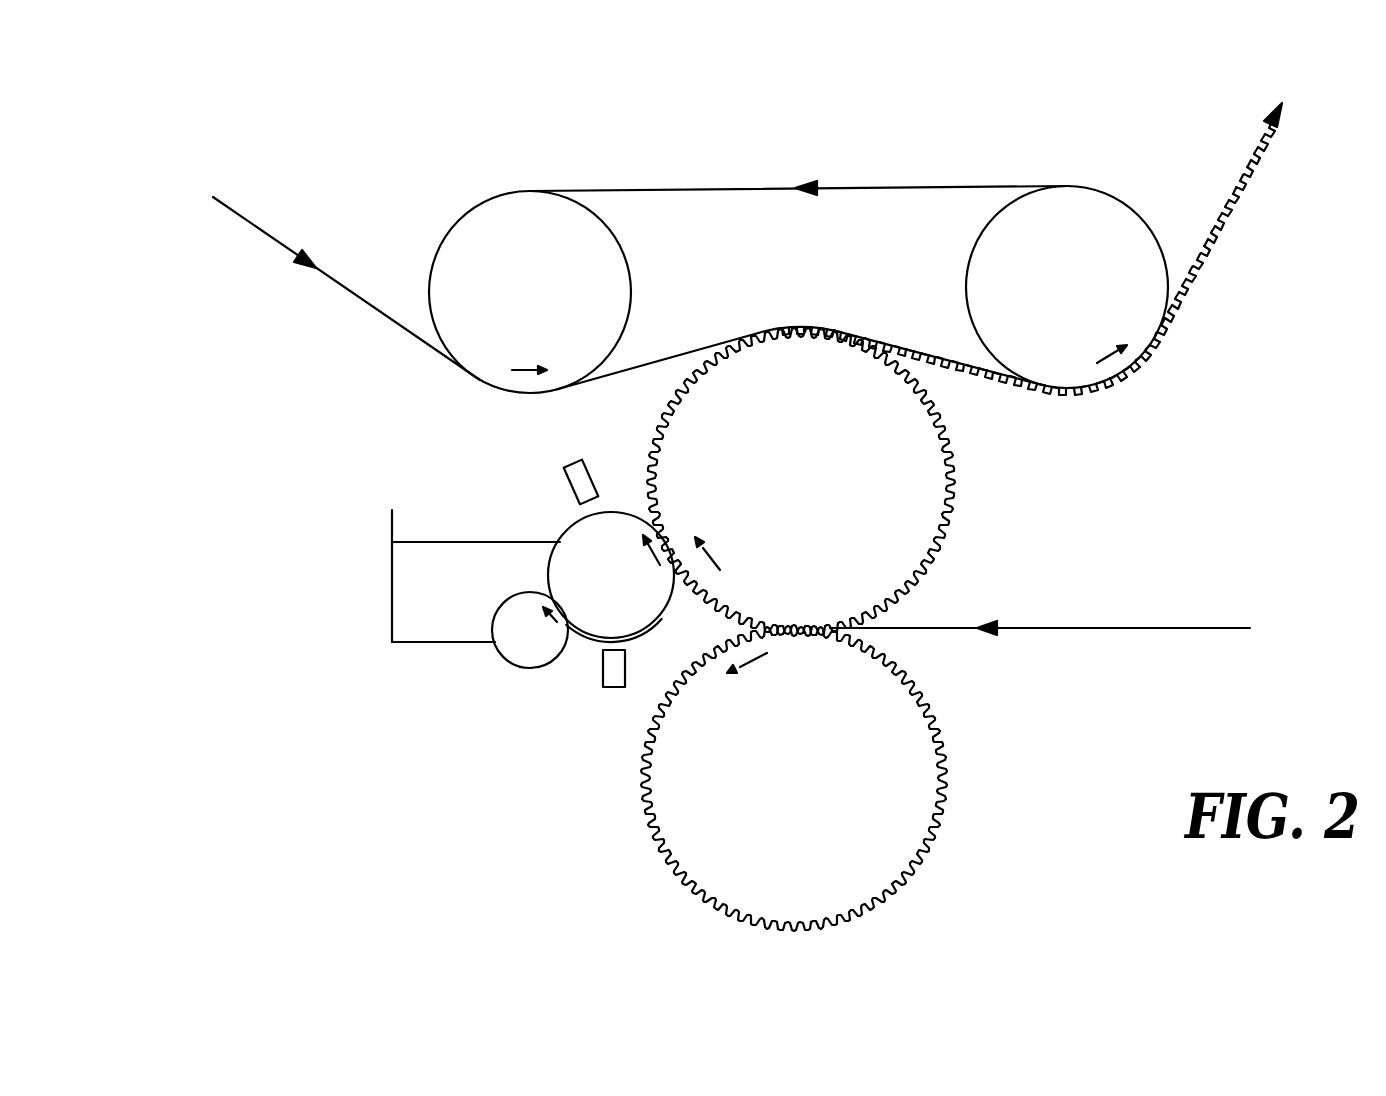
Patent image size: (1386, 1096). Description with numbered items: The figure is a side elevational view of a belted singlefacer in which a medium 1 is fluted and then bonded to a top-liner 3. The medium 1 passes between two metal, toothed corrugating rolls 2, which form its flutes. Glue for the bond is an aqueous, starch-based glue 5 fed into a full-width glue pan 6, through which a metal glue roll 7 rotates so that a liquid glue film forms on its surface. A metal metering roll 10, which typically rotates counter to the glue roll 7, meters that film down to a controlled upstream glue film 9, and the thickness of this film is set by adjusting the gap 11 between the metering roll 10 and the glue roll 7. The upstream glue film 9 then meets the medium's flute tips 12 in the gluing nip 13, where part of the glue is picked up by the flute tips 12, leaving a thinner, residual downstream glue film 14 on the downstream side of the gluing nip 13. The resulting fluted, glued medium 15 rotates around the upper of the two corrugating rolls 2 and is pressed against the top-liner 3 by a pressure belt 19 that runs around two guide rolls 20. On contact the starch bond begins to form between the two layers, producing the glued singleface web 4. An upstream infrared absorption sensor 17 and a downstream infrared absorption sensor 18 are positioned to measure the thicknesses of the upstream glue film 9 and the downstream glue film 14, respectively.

The medium 1 is at (1068, 628).
The corrugating rolls 2 is at (887, 602).
The top-liner 3 is at (273, 238).
The singleface web 4 is at (1207, 257).
The glue 5 is at (427, 542).
The glue pan 6 is at (410, 642).
The glue roll 7 is at (560, 540).
The upstream glue film 9 is at (663, 622).
The metering roll 10 is at (517, 653).
The gap 11 is at (572, 627).
The flute tips 12 is at (693, 578).
The gluing nip 13 is at (667, 533).
The downstream glue film 14 is at (577, 515).
The fluted, glued medium 15 is at (668, 408).
The upstream infrared absorption sensor 17 is at (620, 688).
The downstream infrared absorption sensor 18 is at (573, 468).
The pressure belt 19 is at (668, 352).
The guide rolls 20 is at (470, 257).